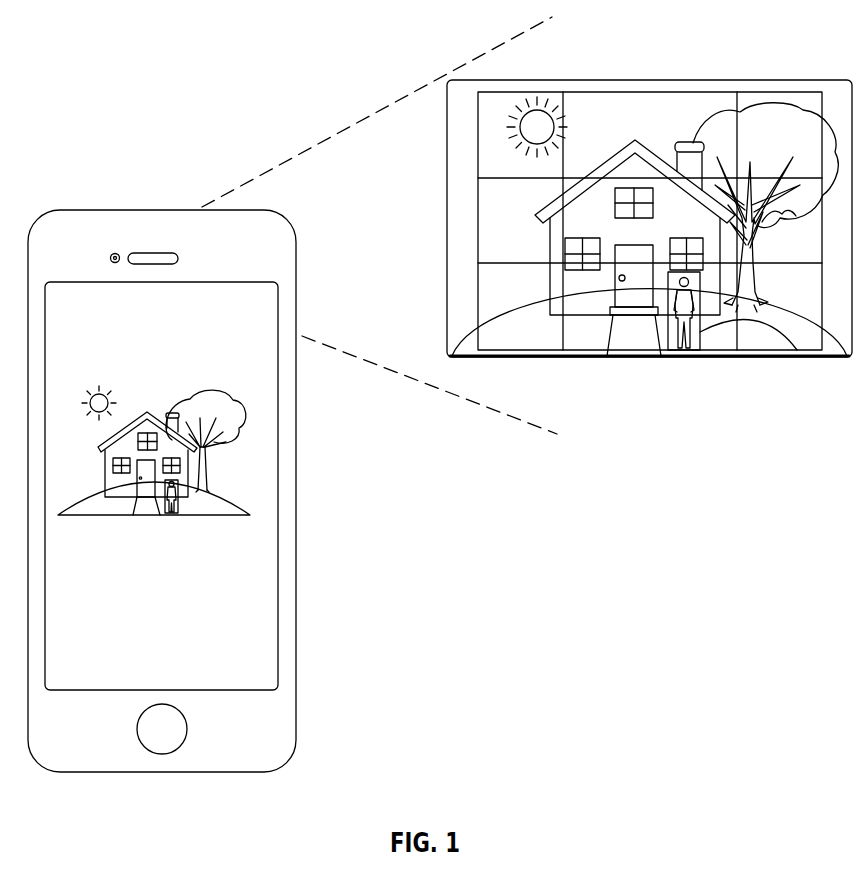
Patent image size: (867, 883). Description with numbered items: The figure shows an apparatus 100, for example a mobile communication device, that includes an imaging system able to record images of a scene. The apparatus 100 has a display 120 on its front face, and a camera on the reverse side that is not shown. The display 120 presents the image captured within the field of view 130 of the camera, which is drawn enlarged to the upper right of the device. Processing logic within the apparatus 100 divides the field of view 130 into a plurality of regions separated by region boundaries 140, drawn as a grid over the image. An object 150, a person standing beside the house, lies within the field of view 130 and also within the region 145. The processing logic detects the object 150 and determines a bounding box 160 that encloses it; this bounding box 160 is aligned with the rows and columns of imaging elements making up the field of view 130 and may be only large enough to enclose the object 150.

The apparatus 100 is at (88, 210).
The display 120 is at (279, 550).
The field of view 130 is at (620, 80).
The region boundaries 140 is at (748, 92).
The region 145 is at (788, 352).
The object 150 is at (677, 352).
The bounding box 160 is at (733, 352).